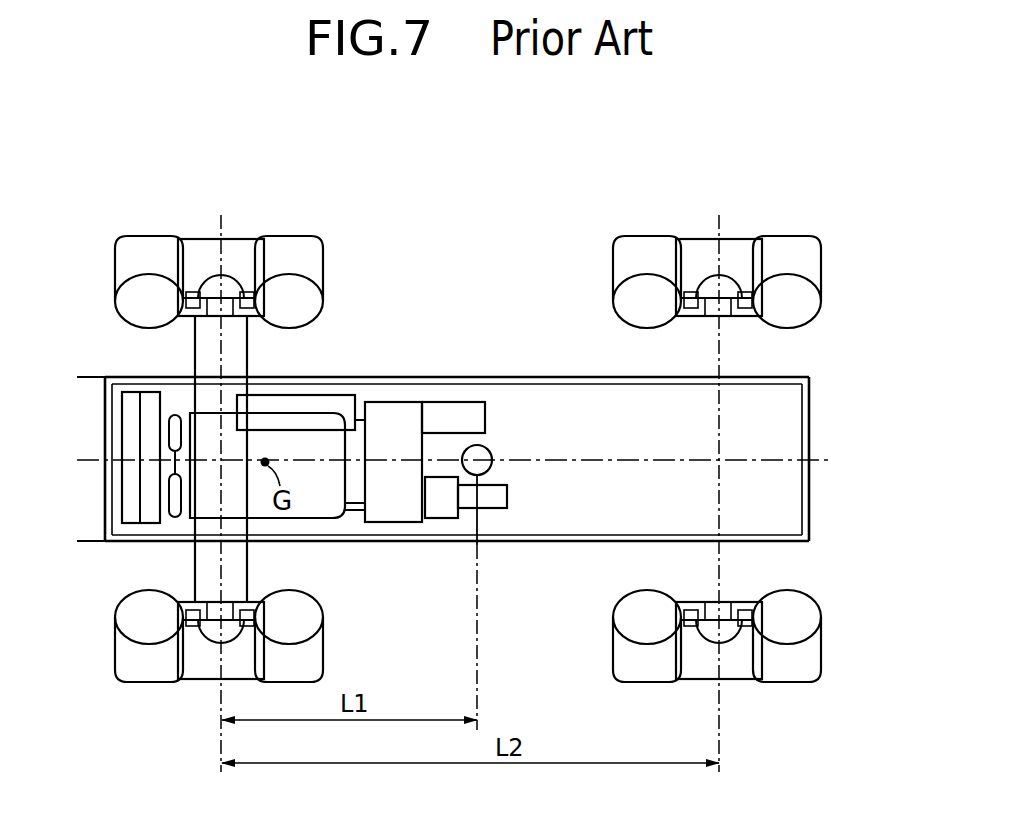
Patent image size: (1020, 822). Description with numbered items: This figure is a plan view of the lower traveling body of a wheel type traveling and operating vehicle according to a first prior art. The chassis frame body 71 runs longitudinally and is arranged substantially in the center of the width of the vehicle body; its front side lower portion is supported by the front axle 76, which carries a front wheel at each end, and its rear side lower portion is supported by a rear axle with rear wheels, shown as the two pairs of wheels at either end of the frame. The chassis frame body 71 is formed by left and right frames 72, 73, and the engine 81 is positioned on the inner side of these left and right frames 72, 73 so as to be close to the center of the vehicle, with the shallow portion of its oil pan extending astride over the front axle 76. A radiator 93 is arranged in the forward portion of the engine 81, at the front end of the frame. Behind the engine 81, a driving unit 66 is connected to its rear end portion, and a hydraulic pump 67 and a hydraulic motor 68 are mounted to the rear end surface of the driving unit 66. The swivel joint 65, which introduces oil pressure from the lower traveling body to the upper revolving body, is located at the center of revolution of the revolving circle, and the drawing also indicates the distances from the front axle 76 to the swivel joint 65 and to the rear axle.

The chassis frame body 71 is at (479, 458).
The right frame 73 is at (579, 378).
The left frame 72 is at (580, 541).
The front axle 76 is at (195, 356).
The radiator 93 is at (128, 488).
The engine 81 is at (313, 447).
The driving unit 66 is at (397, 404).
The hydraulic motor 68 is at (486, 411).
The hydraulic pump 67 is at (445, 507).
The swivel joint 65 is at (492, 453).